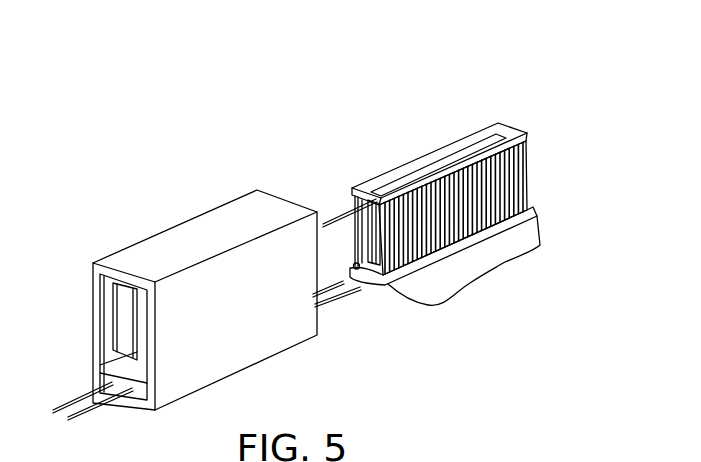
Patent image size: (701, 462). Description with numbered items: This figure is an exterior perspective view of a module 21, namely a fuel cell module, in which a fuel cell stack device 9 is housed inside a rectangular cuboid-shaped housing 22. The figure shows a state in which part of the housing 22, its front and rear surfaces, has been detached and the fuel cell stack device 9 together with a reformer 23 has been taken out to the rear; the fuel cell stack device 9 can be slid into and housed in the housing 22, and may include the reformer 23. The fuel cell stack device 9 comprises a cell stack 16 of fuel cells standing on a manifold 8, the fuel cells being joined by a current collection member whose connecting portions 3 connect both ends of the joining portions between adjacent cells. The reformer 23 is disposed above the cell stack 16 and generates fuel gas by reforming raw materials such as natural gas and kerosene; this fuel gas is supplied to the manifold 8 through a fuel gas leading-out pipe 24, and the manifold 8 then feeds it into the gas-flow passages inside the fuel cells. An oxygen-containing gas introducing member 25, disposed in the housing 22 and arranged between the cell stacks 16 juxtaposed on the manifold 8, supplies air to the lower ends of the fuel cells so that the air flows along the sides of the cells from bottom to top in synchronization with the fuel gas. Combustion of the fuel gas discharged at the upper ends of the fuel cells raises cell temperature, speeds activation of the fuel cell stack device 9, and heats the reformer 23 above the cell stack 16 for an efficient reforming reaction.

The connecting portion 3 is at (530, 150).
The manifold 8 is at (390, 286).
The fuel cell stack device 9 is at (460, 118).
The cell stack 16 is at (490, 272).
The module 21 is at (168, 50).
The housing 22 is at (207, 223).
The reformer 23 is at (356, 188).
The fuel gas leading-out pipe 24 is at (350, 190).
The oxygen-containing gas introducing member 25 is at (137, 313).